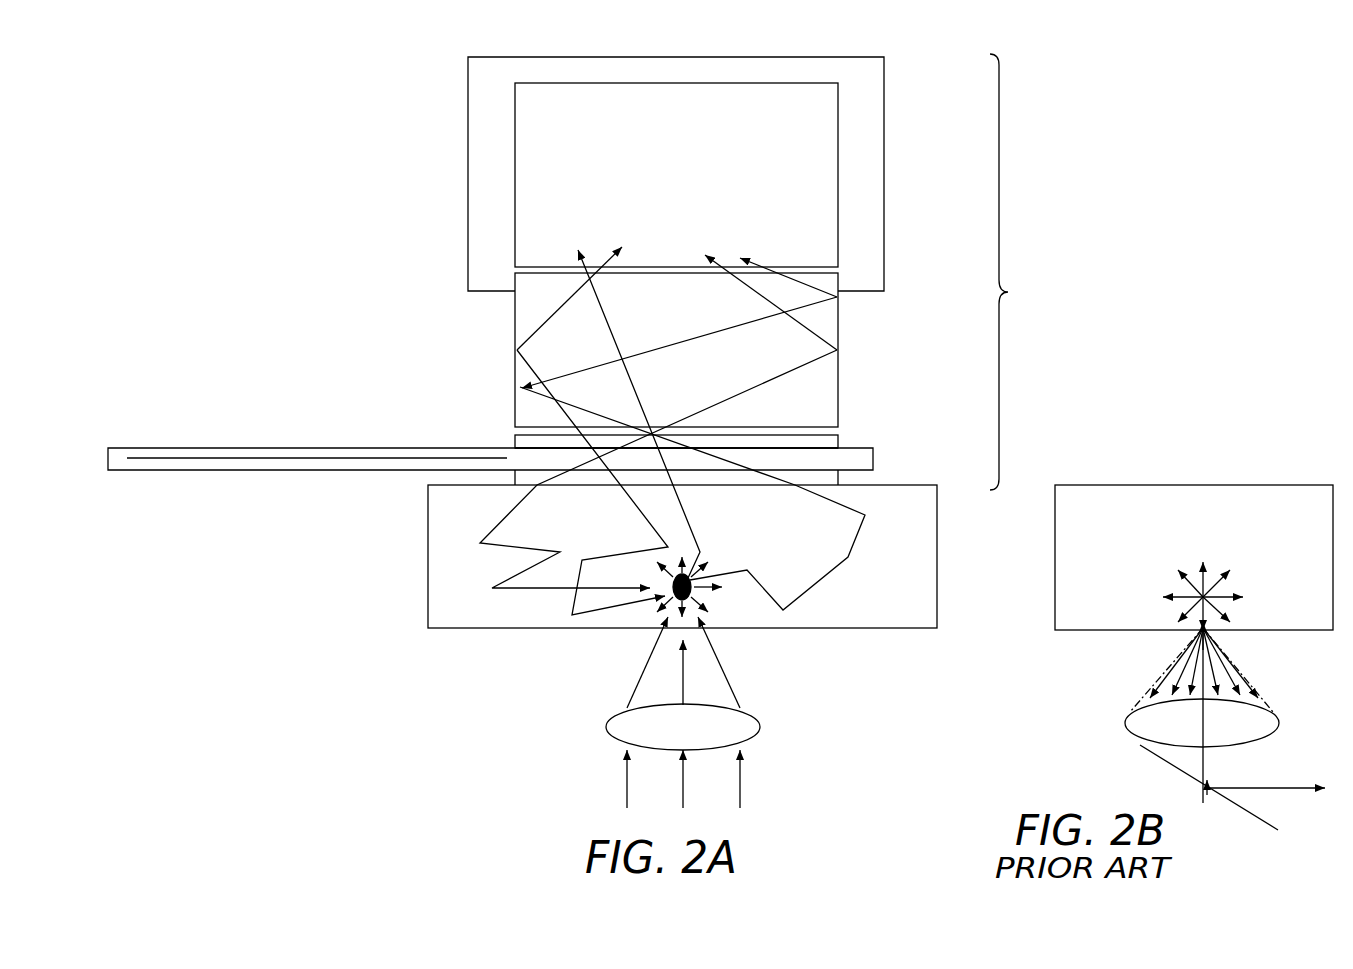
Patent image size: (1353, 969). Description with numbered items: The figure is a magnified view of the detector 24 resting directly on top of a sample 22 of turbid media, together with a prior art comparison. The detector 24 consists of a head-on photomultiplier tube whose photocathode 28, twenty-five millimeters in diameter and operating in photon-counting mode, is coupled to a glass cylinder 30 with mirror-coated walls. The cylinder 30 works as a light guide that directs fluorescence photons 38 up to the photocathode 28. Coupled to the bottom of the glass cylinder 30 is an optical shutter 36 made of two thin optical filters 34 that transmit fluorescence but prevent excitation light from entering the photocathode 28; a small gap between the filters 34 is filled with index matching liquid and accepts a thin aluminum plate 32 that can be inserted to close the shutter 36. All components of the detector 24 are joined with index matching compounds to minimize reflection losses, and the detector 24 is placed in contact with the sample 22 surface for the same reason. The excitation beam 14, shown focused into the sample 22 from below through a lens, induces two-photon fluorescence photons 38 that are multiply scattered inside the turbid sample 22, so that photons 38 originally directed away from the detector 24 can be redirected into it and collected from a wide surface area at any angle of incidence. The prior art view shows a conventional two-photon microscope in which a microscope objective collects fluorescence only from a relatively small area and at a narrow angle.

The excitation beam 14 is at (615, 782).
The sample 22 is at (450, 610).
The detector 24 is at (1021, 272).
The photocathode 28 is at (533, 106).
The glass cylinder 30 is at (822, 320).
The aluminum plate 32 is at (310, 447).
The optical filters 34 is at (835, 478).
The optical shutter 36 is at (483, 436).
The fluorescence photons 38 is at (733, 575).